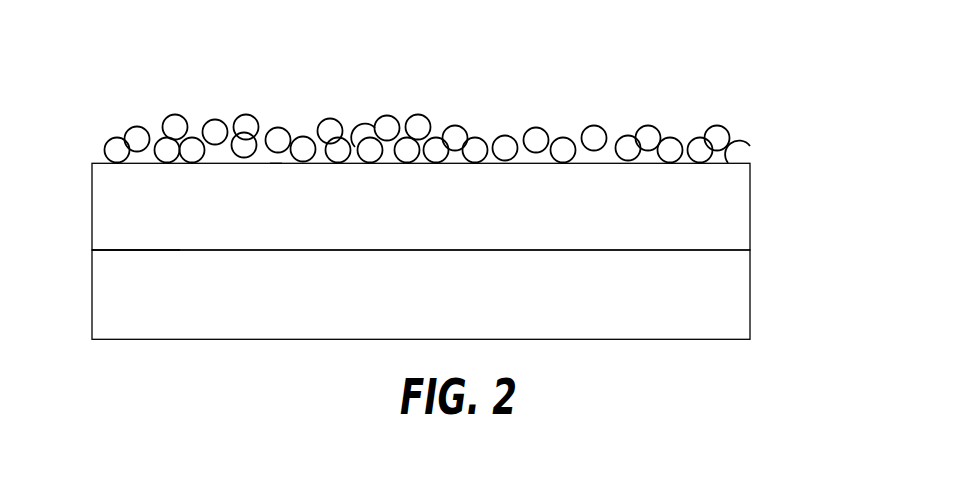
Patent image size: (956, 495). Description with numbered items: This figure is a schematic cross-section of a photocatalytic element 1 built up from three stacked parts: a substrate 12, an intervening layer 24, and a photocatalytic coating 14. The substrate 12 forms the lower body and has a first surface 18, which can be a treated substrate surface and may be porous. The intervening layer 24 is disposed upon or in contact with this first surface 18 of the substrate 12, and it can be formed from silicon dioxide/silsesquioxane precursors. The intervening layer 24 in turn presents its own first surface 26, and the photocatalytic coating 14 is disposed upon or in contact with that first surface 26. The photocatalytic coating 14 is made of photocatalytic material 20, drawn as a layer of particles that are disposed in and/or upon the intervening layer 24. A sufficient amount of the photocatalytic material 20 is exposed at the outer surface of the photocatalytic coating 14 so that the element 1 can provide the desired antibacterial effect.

The photocatalytic element 1 is at (435, 182).
The substrate 12 is at (720, 295).
The photocatalytic coating 14 is at (460, 108).
The first surface of the substrate 18 is at (158, 250).
The photocatalytic material 20 is at (594, 138).
The intervening layer 24 is at (715, 201).
The first surface of the intervening layer 26 is at (275, 158).